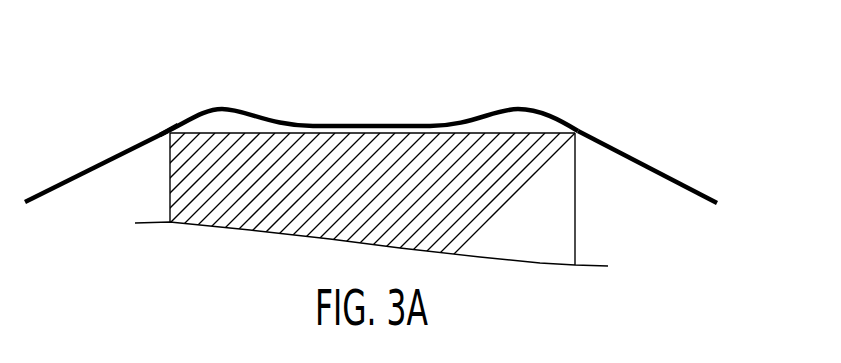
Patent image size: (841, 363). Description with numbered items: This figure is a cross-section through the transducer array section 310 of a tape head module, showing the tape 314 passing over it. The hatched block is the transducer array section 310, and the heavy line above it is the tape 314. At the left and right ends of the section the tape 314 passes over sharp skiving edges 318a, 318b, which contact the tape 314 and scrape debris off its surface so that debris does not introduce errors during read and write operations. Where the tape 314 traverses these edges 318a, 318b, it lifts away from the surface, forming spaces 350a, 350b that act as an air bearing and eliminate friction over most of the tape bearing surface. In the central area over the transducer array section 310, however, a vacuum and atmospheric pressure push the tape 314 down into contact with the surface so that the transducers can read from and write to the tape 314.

The tape 314 is at (60, 182).
The skiving edge 318a is at (168, 130).
The air bearing space 350a is at (222, 122).
The transducer array section 310 is at (388, 130).
The air bearing space 350b is at (525, 123).
The skiving edge 318b is at (578, 130).